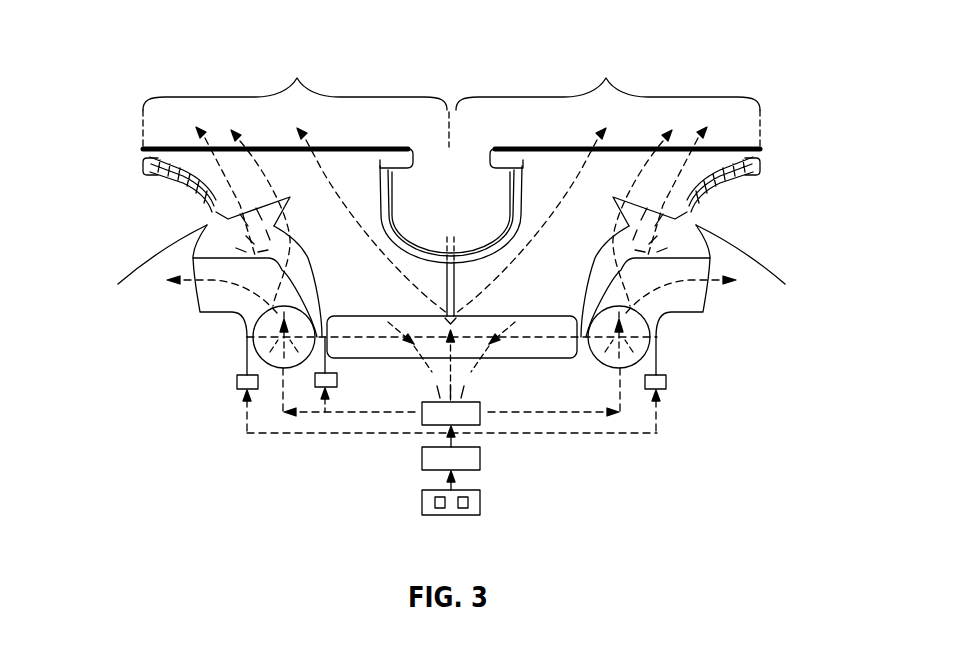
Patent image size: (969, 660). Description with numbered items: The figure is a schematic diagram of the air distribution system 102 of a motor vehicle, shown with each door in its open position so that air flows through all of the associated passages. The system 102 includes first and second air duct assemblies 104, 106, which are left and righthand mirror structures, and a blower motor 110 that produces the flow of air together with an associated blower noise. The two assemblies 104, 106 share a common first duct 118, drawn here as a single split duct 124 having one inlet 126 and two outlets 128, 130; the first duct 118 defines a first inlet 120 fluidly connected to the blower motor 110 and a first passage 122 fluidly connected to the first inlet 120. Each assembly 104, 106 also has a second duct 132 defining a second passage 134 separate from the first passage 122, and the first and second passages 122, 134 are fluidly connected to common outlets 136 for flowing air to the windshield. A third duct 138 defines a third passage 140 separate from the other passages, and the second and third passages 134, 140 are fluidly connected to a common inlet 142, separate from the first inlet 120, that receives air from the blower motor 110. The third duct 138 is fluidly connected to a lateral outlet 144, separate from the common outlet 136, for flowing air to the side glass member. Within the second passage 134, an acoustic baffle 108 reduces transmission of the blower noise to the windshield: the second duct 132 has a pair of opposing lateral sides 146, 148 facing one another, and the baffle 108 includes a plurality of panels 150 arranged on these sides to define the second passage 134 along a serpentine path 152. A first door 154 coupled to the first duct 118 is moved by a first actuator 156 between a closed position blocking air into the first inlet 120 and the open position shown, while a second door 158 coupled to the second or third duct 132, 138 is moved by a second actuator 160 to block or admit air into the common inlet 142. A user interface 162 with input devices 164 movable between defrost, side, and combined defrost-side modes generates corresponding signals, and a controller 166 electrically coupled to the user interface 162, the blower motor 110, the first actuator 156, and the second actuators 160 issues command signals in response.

The air distribution system 102 is at (122, 89).
The first air duct assembly 104 is at (296, 97).
The second air duct assembly 106 is at (608, 97).
The acoustic baffle 108 is at (449, 208).
The blower motor 110 is at (438, 399).
The first duct 118 is at (451, 232).
The first inlet 120 is at (451, 375).
The first passage 122 is at (380, 350).
The single split duct 124 is at (440, 250).
The inlet 126 is at (572, 335).
The first outlet 128 is at (170, 147).
The second outlet 130 is at (717, 147).
The second duct 132 is at (175, 265).
The second passage 134 is at (447, 159).
The common outlet 136 is at (443, 203).
The third duct 138 is at (200, 313).
The third passage 140 is at (200, 314).
The common inlet 142 is at (245, 355).
The lateral outlet 144 is at (192, 288).
The lateral side 146 is at (210, 207).
The lateral side 148 is at (305, 250).
The panels 150 is at (207, 227).
The serpentine path 152 is at (143, 158).
The first door 154 is at (386, 316).
The first actuator 156 is at (303, 370).
The second door 158 is at (279, 368).
The second actuator 160 is at (250, 400).
The user interface 162 is at (423, 500).
The input device 164 is at (435, 502).
The controller 166 is at (482, 459).